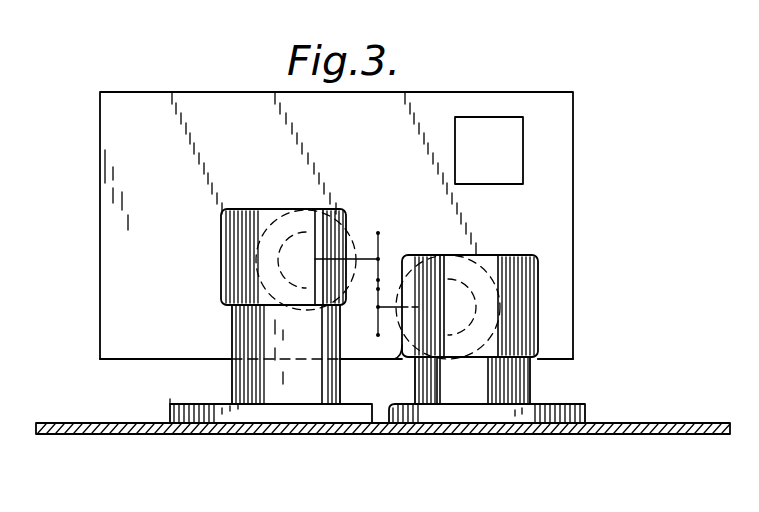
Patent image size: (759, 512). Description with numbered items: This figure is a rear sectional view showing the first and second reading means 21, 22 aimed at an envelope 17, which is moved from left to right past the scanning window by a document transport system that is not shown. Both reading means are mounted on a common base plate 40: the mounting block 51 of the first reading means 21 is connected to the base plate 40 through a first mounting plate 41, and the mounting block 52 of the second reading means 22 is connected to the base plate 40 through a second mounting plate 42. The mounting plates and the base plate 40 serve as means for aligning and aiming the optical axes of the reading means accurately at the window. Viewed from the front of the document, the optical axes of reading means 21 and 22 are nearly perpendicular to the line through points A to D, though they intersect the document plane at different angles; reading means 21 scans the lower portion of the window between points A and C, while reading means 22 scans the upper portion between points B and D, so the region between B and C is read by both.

The envelope 17 is at (553, 213).
The first reading means 21 is at (563, 360).
The second reading means 22 is at (214, 317).
The base plate 40 is at (108, 437).
The first mounting plate 41 is at (586, 412).
The second mounting plate 42 is at (170, 404).
The mounting block 51 is at (378, 232).
The mounting block 52 is at (232, 343).